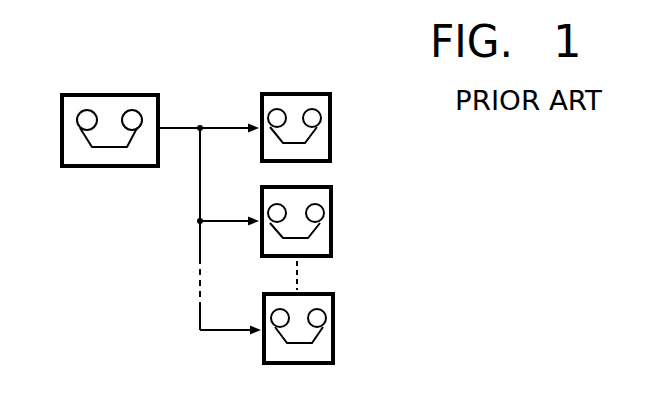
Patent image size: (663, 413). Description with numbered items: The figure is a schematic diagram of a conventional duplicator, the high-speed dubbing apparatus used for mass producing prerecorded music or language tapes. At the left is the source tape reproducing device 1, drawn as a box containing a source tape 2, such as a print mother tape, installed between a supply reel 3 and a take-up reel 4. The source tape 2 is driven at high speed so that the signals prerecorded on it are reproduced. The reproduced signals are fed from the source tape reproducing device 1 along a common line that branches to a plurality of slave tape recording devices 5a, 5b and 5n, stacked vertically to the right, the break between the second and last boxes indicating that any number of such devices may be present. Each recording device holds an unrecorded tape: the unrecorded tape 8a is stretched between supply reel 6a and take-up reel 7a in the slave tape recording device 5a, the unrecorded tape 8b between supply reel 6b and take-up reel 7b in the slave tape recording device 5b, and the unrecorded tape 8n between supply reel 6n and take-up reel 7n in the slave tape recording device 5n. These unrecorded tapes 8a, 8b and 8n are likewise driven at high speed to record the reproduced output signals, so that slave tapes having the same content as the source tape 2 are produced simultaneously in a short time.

The source tape reproducing device 1 is at (112, 97).
The source tape 2 is at (118, 147).
The supply reel 3 is at (87, 110).
The take-up reel 4 is at (136, 115).
The slave tape recording device 5a is at (310, 98).
The supply reel 6a is at (277, 109).
The take-up reel 7a is at (321, 118).
The unrecorded tape 8a is at (313, 133).
The slave tape recording device 5b is at (325, 193).
The supply reel 6b is at (272, 207).
The take-up reel 7b is at (324, 213).
The unrecorded tape 8b is at (316, 230).
The slave tape recording device 5n is at (327, 302).
The supply reel 6n is at (275, 311).
The take-up reel 7n is at (326, 318).
The unrecorded tape 8n is at (320, 338).